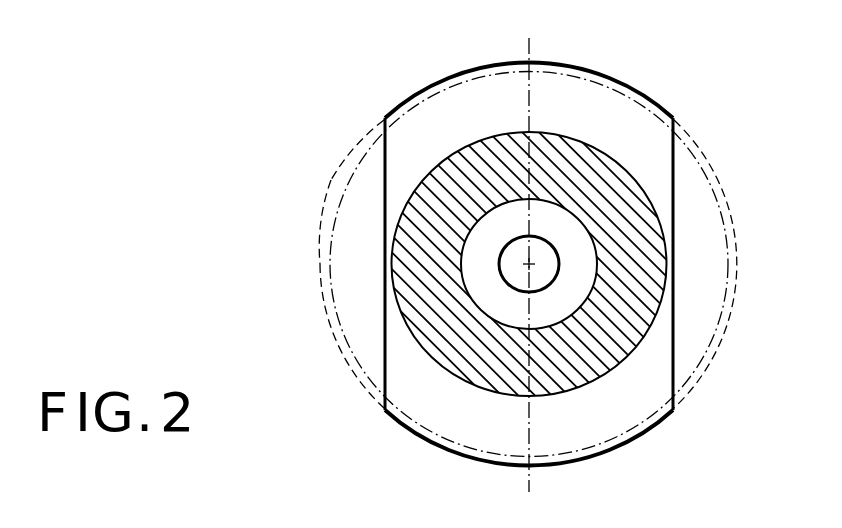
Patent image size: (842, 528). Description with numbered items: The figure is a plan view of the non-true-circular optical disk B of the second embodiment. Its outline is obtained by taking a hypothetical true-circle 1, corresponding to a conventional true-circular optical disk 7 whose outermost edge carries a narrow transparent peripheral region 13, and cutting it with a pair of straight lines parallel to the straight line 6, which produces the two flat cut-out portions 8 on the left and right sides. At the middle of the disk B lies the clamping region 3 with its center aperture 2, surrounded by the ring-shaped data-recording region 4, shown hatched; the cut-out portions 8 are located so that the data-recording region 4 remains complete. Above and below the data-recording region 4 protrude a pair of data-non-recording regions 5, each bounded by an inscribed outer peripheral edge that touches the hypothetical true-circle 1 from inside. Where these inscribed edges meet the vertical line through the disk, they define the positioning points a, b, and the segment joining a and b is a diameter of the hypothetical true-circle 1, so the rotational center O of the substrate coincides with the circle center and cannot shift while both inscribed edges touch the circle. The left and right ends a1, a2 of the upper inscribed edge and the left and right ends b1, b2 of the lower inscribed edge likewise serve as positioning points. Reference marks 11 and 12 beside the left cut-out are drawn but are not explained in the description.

The hypothetical true-circle 1 is at (712, 149).
The center aperture 2 is at (551, 272).
The clamping region 3 is at (565, 297).
The data-recording region 4 is at (618, 329).
The data-non-recording region 5 is at (473, 112).
The straight line 6 is at (526, 108).
The true-circular optical disk 7 is at (721, 193).
The cut-out portions 8 is at (352, 303).
The first removed arc portion 11 is at (333, 188).
The second removed arc portion 12 is at (325, 223).
The transparent peripheral region 13 is at (320, 245).
The rotational center O is at (531, 262).
The positioning point a is at (533, 64).
The positioning point b is at (528, 467).
The left end of the upper inscribed outer peripheral edge a1 is at (385, 117).
The right end of the upper inscribed outer peripheral edge a2 is at (673, 117).
The left end of the lower inscribed outer peripheral edge b1 is at (384, 410).
The right end of the lower inscribed outer peripheral edge b2 is at (673, 411).
The optical disk B is at (652, 92).